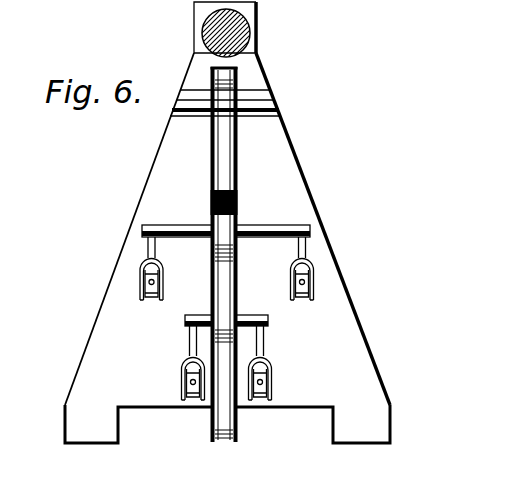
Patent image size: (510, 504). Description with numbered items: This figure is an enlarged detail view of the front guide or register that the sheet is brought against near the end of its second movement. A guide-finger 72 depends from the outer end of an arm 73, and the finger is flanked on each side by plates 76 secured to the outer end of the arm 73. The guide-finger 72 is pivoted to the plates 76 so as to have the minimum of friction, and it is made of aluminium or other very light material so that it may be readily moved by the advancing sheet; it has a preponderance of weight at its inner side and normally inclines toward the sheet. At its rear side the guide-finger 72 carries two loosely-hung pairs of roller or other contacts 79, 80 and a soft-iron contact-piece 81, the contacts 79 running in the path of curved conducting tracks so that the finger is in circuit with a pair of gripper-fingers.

The guide-finger 72 is at (237, 281).
The arm 73 is at (250, 35).
The plates 76 is at (158, 162).
The roller contacts 79 is at (140, 282).
The roller contacts 80 is at (182, 381).
The soft-iron contact-piece 81 is at (238, 186).